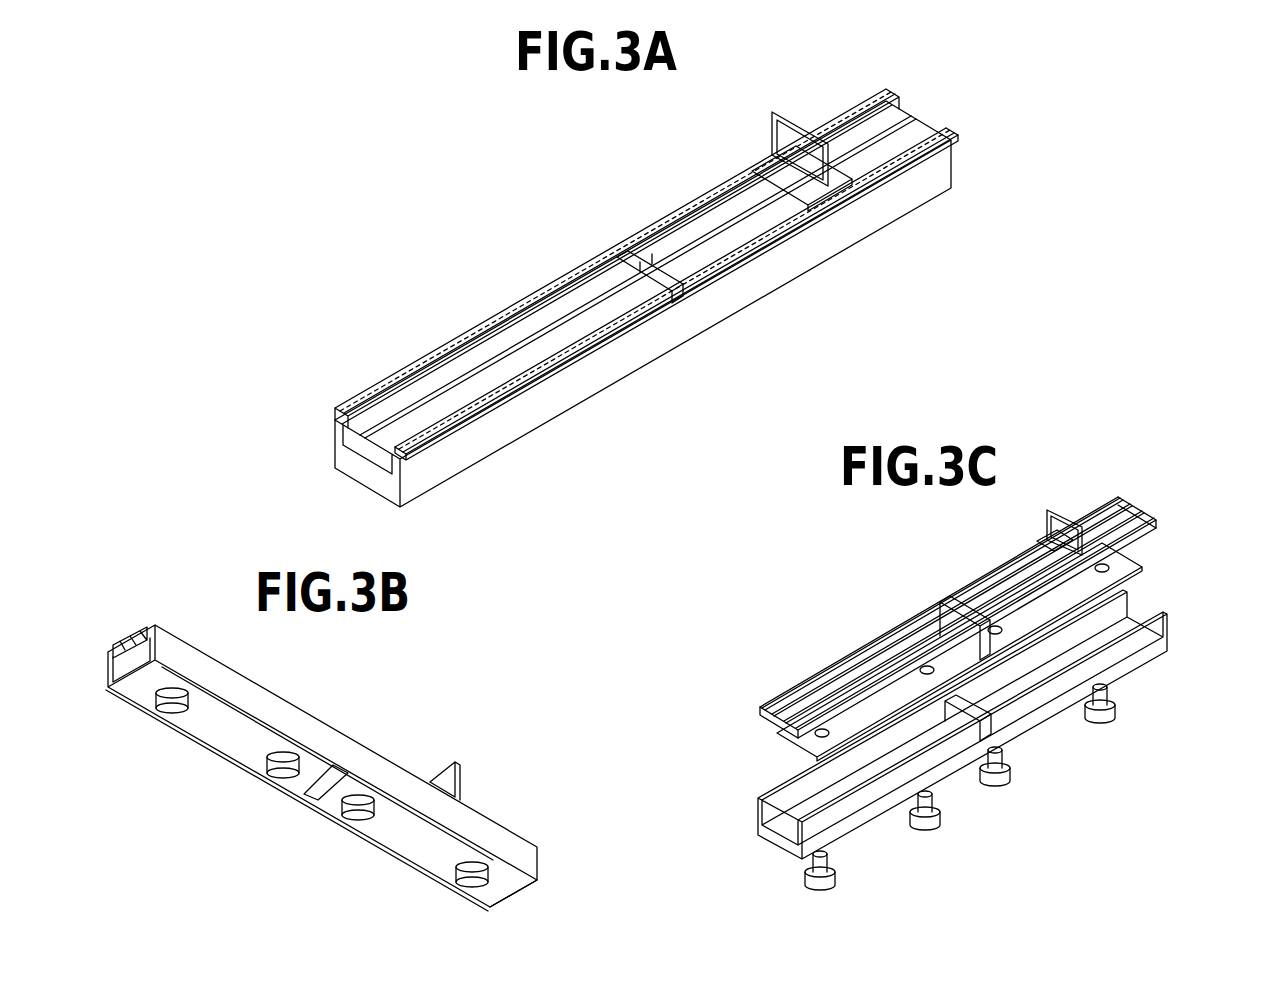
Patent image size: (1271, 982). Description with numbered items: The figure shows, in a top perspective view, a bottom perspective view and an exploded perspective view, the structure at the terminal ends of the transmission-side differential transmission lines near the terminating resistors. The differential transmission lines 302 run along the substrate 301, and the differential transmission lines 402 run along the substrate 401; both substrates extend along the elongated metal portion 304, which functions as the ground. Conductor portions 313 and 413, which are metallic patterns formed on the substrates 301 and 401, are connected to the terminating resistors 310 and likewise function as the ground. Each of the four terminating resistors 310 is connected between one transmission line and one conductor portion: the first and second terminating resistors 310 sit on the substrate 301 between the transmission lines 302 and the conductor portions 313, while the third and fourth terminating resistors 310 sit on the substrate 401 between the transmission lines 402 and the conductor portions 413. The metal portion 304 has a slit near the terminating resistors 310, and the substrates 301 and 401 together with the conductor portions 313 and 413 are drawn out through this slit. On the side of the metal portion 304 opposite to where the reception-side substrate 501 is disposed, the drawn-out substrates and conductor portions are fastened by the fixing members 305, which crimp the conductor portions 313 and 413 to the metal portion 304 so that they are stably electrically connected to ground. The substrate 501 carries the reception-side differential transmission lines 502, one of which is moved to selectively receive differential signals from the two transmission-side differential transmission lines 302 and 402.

In FIG. 3A, the substrate 301 is at (414, 466).
In FIG. 3B, the substrate 301 is at (136, 692).
In FIG. 3C, the substrate 301 is at (776, 703).
In FIG. 3A, the differential transmission lines 302 is at (497, 407).
In FIG. 3A, the metal portion 304 is at (334, 462).
In FIG. 3B, the metal portion 304 is at (108, 664).
In FIG. 3C, the metal portion 304 is at (780, 845).
In FIG. 3B, the fixing members 305 is at (478, 884).
In FIG. 3C, the fixing members 305 is at (1100, 728).
In FIG. 3A, the terminating resistors 310 is at (674, 294).
In FIG. 3A, the conductor portions 313 is at (530, 322).
In FIG. 3A, the substrate 401 is at (663, 318).
In FIG. 3B, the substrate 401 is at (496, 898).
In FIG. 3C, the substrate 401 is at (959, 610).
In FIG. 3A, the differential transmission lines 402 is at (765, 200).
In FIG. 3A, the conductor portions 413 is at (705, 205).
In FIG. 3A, the substrate 501 is at (843, 205).
In FIG. 3A, the differential transmission lines 502 is at (775, 140).